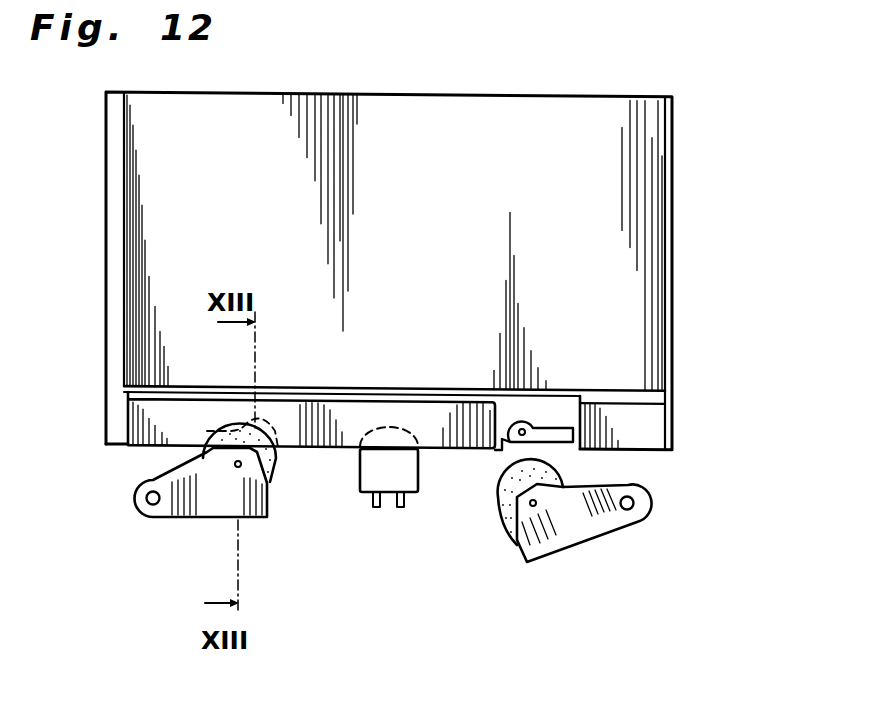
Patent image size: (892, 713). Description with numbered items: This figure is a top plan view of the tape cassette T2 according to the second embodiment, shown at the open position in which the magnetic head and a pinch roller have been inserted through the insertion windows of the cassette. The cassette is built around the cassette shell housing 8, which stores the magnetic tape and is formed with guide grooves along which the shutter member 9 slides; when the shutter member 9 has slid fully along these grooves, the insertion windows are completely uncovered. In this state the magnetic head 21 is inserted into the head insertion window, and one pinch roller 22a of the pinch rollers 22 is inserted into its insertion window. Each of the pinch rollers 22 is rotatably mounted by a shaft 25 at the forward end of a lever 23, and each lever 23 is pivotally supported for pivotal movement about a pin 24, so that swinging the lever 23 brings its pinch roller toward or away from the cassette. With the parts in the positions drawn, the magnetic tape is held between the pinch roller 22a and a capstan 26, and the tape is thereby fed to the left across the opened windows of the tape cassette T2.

The tape cassette T2 is at (631, 86).
The cassette shell housing 8 is at (662, 243).
The shutter member 9 is at (443, 428).
The magnetic head 21 is at (390, 472).
The pinch rollers 22 is at (500, 503).
The pinch roller 22a is at (275, 473).
The lever 23 is at (210, 478).
The pin 24 is at (148, 502).
The shaft 25 is at (238, 466).
The capstan 26 is at (262, 426).